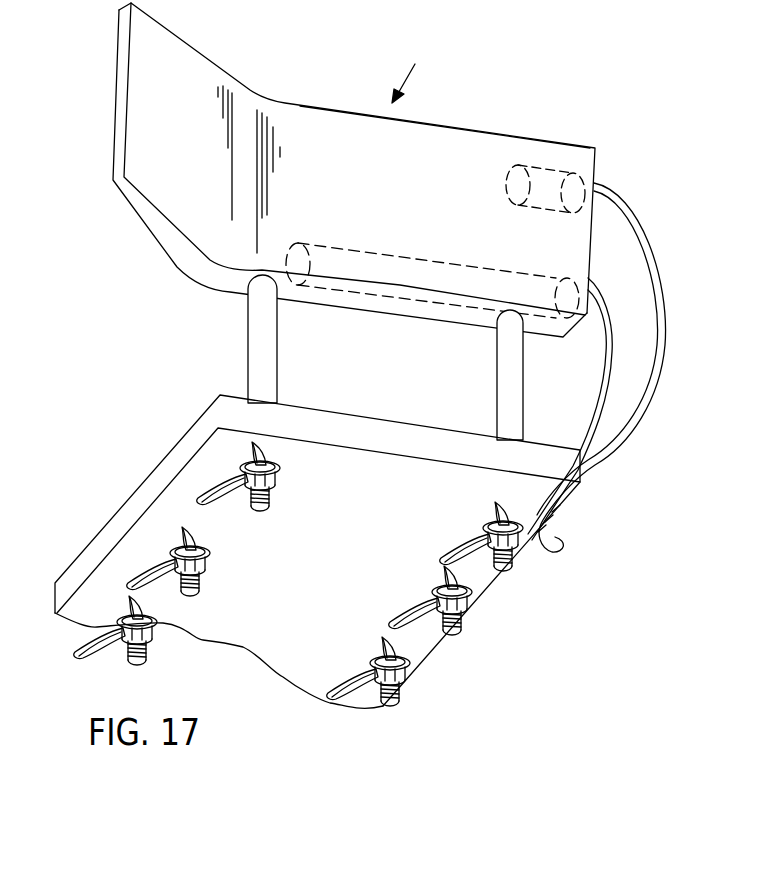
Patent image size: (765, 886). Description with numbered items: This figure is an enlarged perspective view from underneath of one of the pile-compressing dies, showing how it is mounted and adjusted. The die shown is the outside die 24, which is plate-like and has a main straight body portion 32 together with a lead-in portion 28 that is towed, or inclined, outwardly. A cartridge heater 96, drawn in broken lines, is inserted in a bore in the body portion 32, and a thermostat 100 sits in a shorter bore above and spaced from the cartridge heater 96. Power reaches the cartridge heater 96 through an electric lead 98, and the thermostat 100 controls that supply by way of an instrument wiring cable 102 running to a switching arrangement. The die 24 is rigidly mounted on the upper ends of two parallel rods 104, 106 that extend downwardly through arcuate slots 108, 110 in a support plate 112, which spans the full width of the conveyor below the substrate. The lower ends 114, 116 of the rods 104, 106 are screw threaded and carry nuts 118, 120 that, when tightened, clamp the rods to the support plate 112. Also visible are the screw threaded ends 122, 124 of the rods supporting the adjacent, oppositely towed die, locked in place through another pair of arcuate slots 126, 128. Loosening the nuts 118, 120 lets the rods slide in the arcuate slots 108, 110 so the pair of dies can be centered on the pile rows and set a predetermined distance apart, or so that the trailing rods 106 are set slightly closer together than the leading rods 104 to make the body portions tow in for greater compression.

The outside die 24 is at (417, 72).
The lead-in portion 28 is at (188, 57).
The main straight body portion 32 is at (493, 142).
The cartridge heater 96 is at (388, 253).
The thermostat 100 is at (567, 220).
The instrument wiring cable 102 is at (612, 198).
The electric lead 98 is at (595, 368).
The leading rod 104 is at (255, 320).
The trailing rod 106 is at (510, 370).
The support plate 112 is at (137, 495).
The arcuate slot 108 is at (270, 448).
The nut 118 is at (280, 480).
The screw threaded lower end 114 is at (260, 515).
The arcuate slot 126 is at (143, 575).
The screw threaded end 122 is at (187, 597).
The arcuate slot 110 is at (497, 487).
The nut 120 is at (517, 550).
The screw threaded lower end 116 is at (503, 570).
The arcuate slot 128 is at (397, 612).
The screw threaded end 124 is at (450, 633).